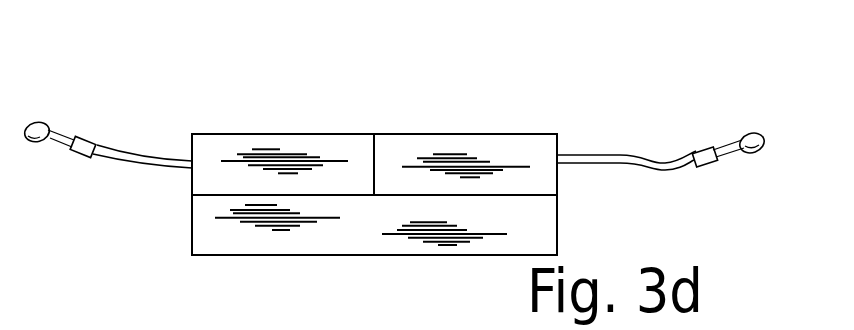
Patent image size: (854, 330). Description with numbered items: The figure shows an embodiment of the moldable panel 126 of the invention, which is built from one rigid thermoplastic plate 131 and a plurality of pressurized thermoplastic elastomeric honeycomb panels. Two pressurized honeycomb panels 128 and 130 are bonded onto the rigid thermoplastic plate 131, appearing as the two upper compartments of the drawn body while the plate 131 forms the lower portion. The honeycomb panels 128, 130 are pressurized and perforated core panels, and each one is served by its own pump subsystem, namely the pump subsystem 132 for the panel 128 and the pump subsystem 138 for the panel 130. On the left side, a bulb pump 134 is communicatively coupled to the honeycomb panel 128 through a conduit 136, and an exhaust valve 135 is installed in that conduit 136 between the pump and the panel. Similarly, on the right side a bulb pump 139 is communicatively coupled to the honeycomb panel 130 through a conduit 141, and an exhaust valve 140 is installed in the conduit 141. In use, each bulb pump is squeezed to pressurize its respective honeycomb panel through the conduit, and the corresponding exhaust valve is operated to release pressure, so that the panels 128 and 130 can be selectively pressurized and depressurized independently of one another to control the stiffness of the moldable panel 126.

The moldable panel 126 is at (443, 100).
The pressurized honeycomb panel 128 is at (282, 138).
The pressurized honeycomb panel 130 is at (495, 143).
The rigid thermoplastic plate 131 is at (540, 222).
The pump subsystem 132 is at (70, 168).
The bulb pump 134 is at (34, 128).
The exhaust valve 135 is at (86, 143).
The conduit 136 is at (166, 162).
The pump subsystem 138 is at (720, 193).
The bulb pump 139 is at (750, 137).
The exhaust valve 140 is at (712, 165).
The conduit 141 is at (615, 155).